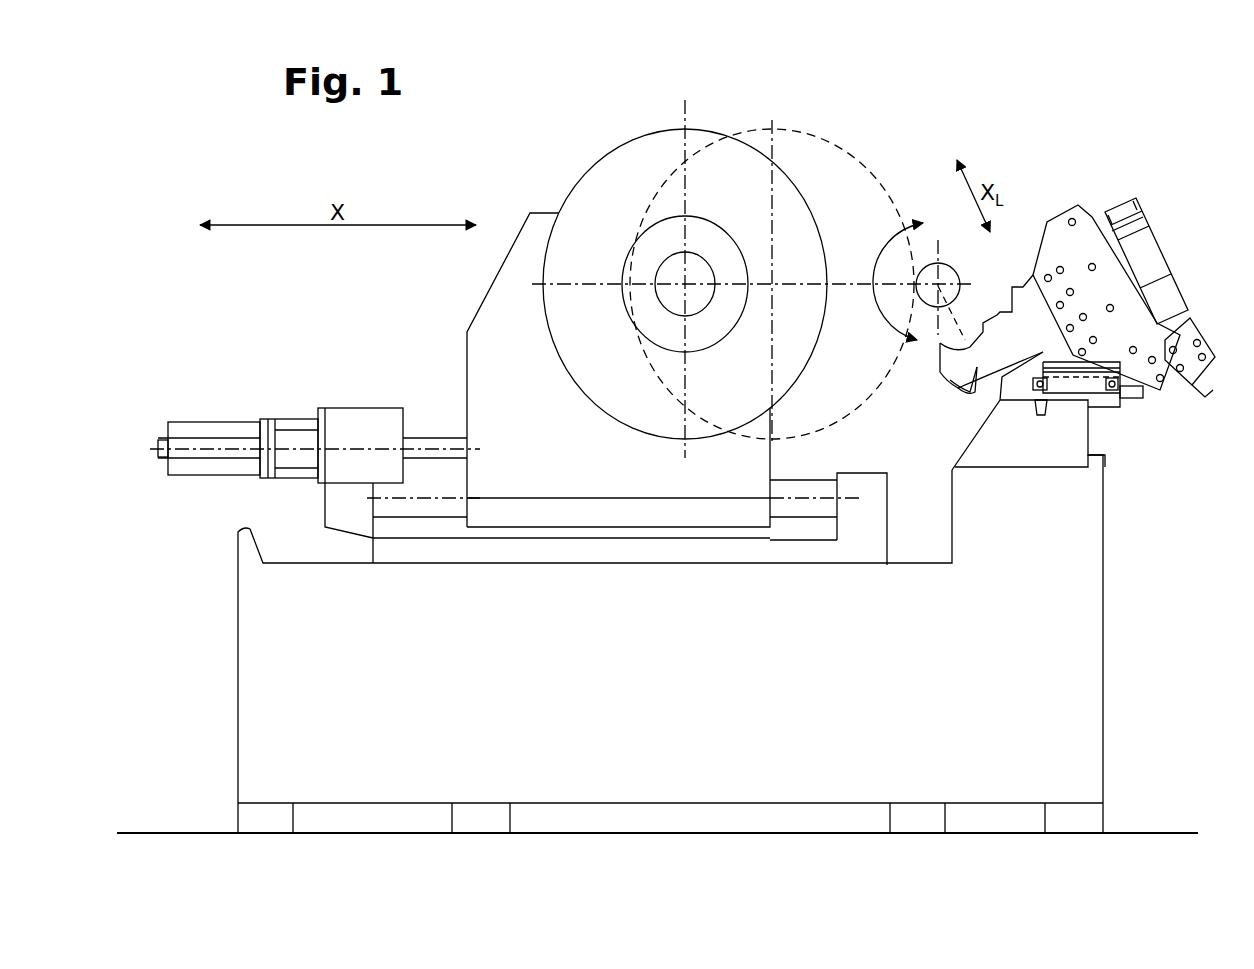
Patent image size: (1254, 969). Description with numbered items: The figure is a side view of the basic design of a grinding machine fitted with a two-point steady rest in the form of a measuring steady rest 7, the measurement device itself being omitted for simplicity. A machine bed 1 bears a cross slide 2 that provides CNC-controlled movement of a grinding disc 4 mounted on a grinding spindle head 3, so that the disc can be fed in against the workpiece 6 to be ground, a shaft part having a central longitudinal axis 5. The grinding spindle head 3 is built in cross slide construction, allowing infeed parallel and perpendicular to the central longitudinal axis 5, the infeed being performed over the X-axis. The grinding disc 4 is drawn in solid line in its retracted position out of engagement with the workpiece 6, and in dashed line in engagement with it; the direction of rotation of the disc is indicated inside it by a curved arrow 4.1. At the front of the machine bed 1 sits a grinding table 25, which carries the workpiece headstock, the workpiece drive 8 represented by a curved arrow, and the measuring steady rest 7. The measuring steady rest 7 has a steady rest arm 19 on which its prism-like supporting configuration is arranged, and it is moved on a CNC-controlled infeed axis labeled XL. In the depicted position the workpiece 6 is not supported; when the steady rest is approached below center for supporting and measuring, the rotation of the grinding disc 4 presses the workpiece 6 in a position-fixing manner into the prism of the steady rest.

The machine bed 1 is at (1060, 681).
The cross slide 2 is at (855, 540).
The grinding spindle head 3 is at (500, 370).
The grinding disc 4 is at (597, 187).
The direction of rotation of the grinding disc 4.1 is at (806, 328).
The central longitudinal axis 5 is at (940, 265).
The workpiece 6 is at (950, 272).
The measuring steady rest 7 is at (1103, 290).
The workpiece drive 8 is at (880, 268).
The steady rest arm 19 is at (970, 368).
The grinding table 25 is at (1072, 436).